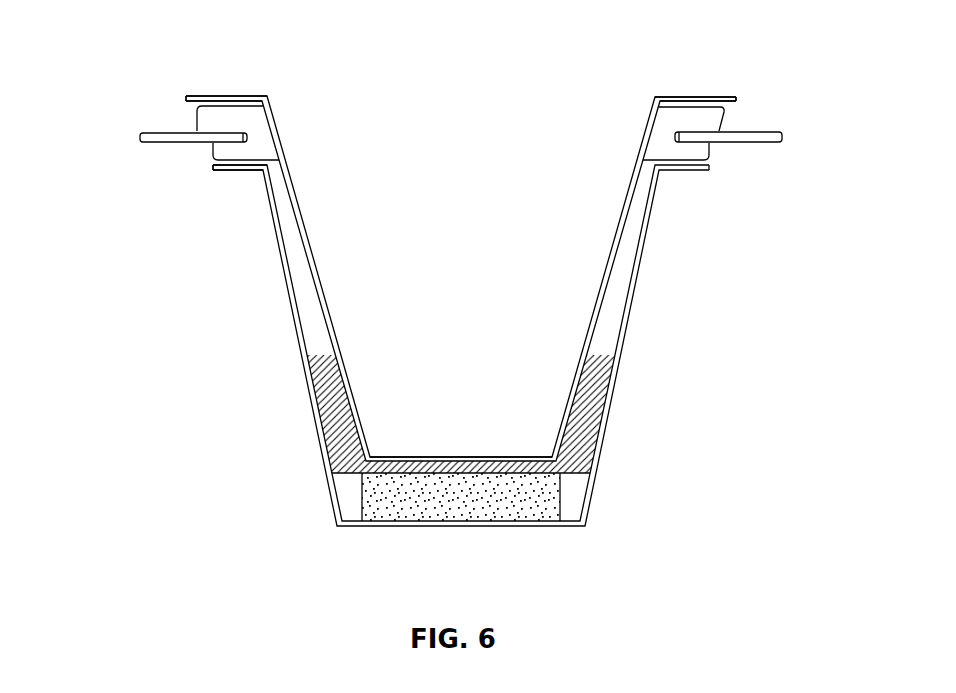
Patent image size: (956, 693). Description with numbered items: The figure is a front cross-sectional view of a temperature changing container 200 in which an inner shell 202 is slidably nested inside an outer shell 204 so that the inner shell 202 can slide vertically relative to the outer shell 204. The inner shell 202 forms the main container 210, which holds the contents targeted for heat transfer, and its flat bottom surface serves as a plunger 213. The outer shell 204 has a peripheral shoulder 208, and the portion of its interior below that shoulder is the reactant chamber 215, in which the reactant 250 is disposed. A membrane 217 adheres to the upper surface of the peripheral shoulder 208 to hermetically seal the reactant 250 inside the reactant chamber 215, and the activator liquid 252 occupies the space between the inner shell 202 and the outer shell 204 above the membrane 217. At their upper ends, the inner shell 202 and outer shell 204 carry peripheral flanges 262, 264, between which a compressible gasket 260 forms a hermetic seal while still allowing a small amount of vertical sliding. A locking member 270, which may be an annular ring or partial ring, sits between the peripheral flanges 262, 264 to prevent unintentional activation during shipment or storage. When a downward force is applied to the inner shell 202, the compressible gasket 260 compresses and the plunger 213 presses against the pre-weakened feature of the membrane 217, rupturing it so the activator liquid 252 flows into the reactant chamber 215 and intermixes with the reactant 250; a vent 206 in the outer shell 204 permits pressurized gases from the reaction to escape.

The temperature changing container 200 is at (146, 47).
The inner shell 202 is at (330, 298).
The outer shell 204 is at (300, 344).
The vent 206 is at (681, 97).
The peripheral shoulder 208 is at (350, 492).
The main container 210 is at (482, 351).
The plunger 213 is at (462, 457).
The reactant chamber 215 is at (478, 502).
The membrane 217 is at (372, 467).
The reactant 250 is at (515, 513).
The activator liquid 252 is at (583, 435).
The compressible gasket 260 is at (199, 120).
The peripheral flange 262 is at (228, 94).
The peripheral flange 264 is at (238, 171).
The locking member 270 is at (176, 143).